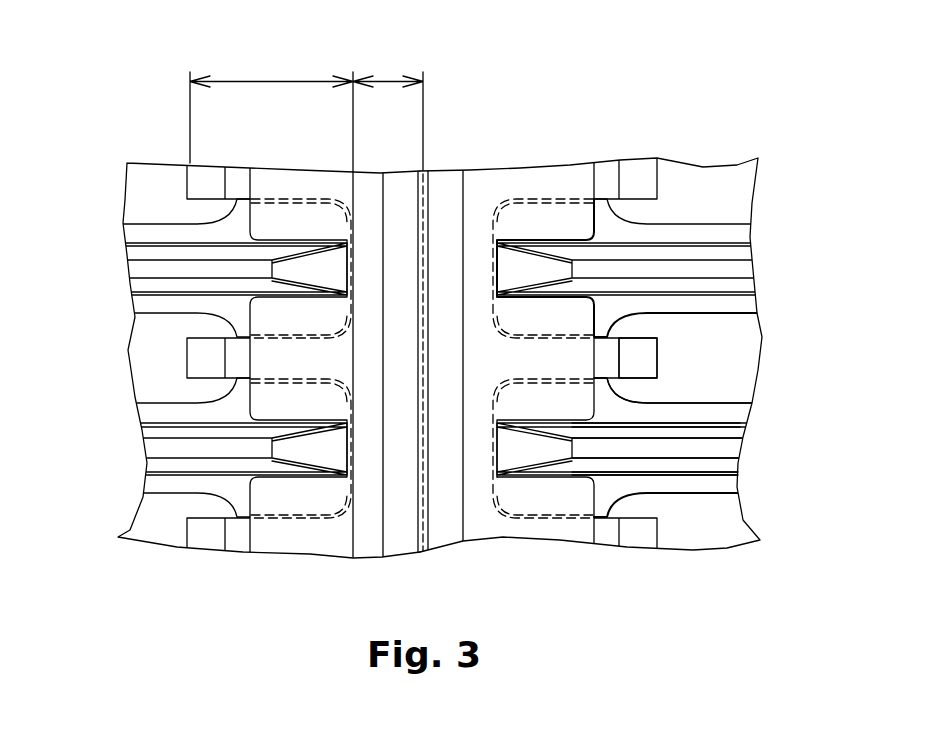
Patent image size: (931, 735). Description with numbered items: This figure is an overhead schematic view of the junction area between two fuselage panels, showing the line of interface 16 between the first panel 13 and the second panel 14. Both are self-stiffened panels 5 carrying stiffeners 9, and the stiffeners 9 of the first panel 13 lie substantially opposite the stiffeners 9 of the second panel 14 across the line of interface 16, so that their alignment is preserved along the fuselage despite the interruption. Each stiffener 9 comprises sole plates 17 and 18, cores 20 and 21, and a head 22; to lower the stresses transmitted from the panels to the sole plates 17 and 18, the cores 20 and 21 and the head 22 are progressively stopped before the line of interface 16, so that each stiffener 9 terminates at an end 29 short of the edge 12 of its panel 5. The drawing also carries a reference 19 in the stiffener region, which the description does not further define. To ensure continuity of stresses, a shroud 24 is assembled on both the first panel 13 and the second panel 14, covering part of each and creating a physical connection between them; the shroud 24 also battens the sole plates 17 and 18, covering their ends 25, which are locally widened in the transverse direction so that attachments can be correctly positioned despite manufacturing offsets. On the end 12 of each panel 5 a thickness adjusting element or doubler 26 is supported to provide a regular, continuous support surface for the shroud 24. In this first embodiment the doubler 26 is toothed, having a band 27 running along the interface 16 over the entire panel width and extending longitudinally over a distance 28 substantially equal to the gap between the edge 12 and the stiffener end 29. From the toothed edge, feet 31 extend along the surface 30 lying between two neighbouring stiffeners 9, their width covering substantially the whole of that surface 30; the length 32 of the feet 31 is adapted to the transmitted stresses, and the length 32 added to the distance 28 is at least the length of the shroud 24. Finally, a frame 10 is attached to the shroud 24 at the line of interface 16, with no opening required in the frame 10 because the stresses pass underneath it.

The self-stiffened panel 5 is at (140, 200).
The stiffener 9 is at (152, 270).
The frame 10 is at (420, 503).
The end of panel 12 is at (408, 202).
The first panel 13 is at (155, 178).
The second panel 14 is at (697, 178).
The line of interface 16 is at (424, 529).
The sole plate 17 is at (728, 410).
The sole plate 18 is at (713, 480).
The block surface portion 19 is at (668, 447).
The core 20 is at (728, 437).
The core 21 is at (725, 467).
The head 22 is at (636, 450).
The shroud 24 is at (617, 517).
The end of sole plate 25 is at (515, 407).
The doubler 26 is at (607, 173).
The band 27 is at (363, 463).
The distance 28 is at (390, 80).
The end of stiffener 29 is at (343, 238).
The surface 30 is at (562, 360).
The foot 31 is at (647, 353).
The length of feet 32 is at (246, 80).